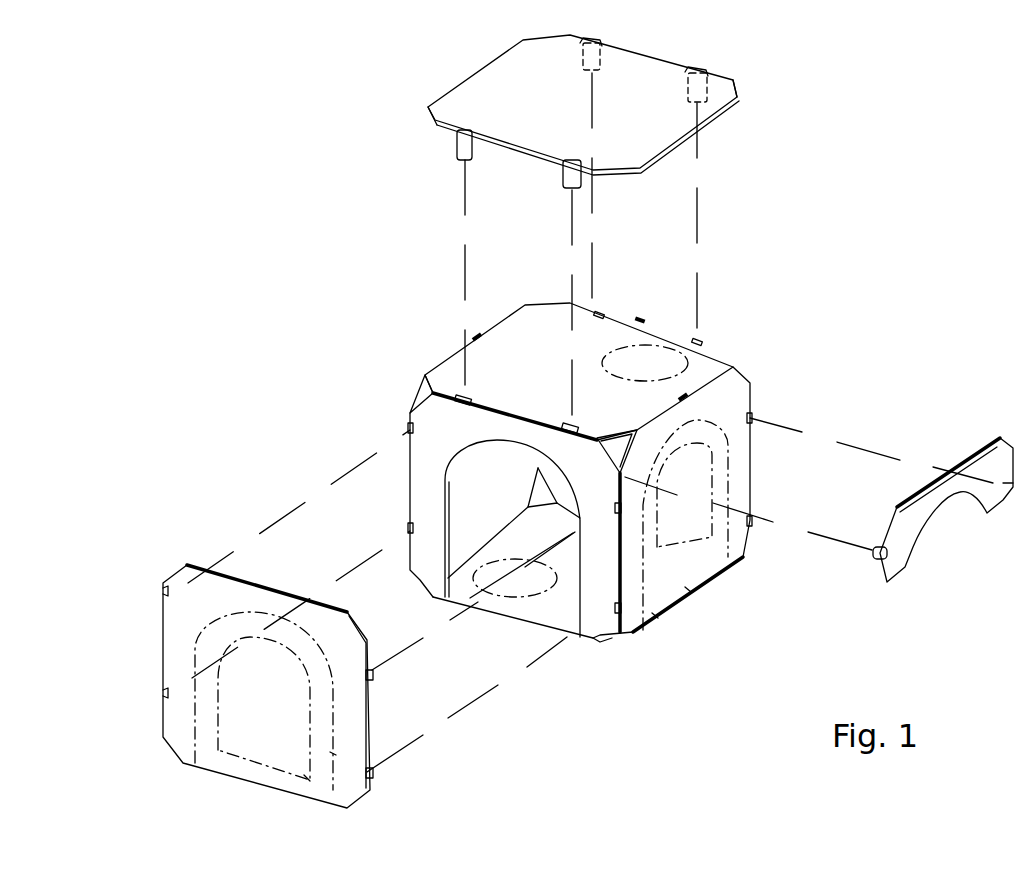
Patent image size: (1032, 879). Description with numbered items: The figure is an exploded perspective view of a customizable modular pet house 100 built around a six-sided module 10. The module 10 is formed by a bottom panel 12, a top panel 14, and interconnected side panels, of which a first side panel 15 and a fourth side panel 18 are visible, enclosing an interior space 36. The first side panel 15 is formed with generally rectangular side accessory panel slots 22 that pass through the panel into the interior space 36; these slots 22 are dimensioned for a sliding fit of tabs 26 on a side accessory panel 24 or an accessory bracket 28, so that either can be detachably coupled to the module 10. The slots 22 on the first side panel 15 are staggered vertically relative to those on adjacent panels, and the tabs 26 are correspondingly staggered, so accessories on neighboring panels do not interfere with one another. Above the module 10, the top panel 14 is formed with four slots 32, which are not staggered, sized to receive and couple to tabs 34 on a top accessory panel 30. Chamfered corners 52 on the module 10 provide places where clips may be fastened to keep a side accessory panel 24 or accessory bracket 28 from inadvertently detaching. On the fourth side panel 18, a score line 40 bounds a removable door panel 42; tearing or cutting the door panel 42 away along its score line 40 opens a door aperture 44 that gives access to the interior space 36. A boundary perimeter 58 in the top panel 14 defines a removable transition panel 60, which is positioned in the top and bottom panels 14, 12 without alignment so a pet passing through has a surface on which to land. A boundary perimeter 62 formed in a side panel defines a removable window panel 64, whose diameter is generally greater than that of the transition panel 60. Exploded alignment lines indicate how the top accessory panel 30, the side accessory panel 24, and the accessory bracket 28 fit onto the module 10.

The modular pet house 100 is at (559, 438).
The six-sided module 10 is at (582, 491).
The bottom panel 12 is at (530, 606).
The top panel 14 is at (527, 334).
The first side panel 15 is at (742, 392).
The fourth side panel 18 is at (425, 484).
The side accessory panel slots 22 is at (613, 508).
The side accessory panel 24 is at (167, 739).
The tabs 26 is at (377, 674).
The accessory bracket 28 is at (907, 544).
The top accessory panel 30 is at (572, 135).
The top panel slots 32 is at (597, 314).
The tabs 34 is at (467, 163).
The interior space 36 is at (562, 608).
The score line 40 is at (333, 753).
The removable door panel 42 is at (307, 778).
The door aperture 44 is at (472, 455).
The chamfered corners 52 is at (612, 638).
The boundary perimeter 58 is at (636, 351).
The removable transition panel 60 is at (610, 334).
The boundary perimeter 62 is at (300, 732).
The removable window panel 64 is at (291, 687).